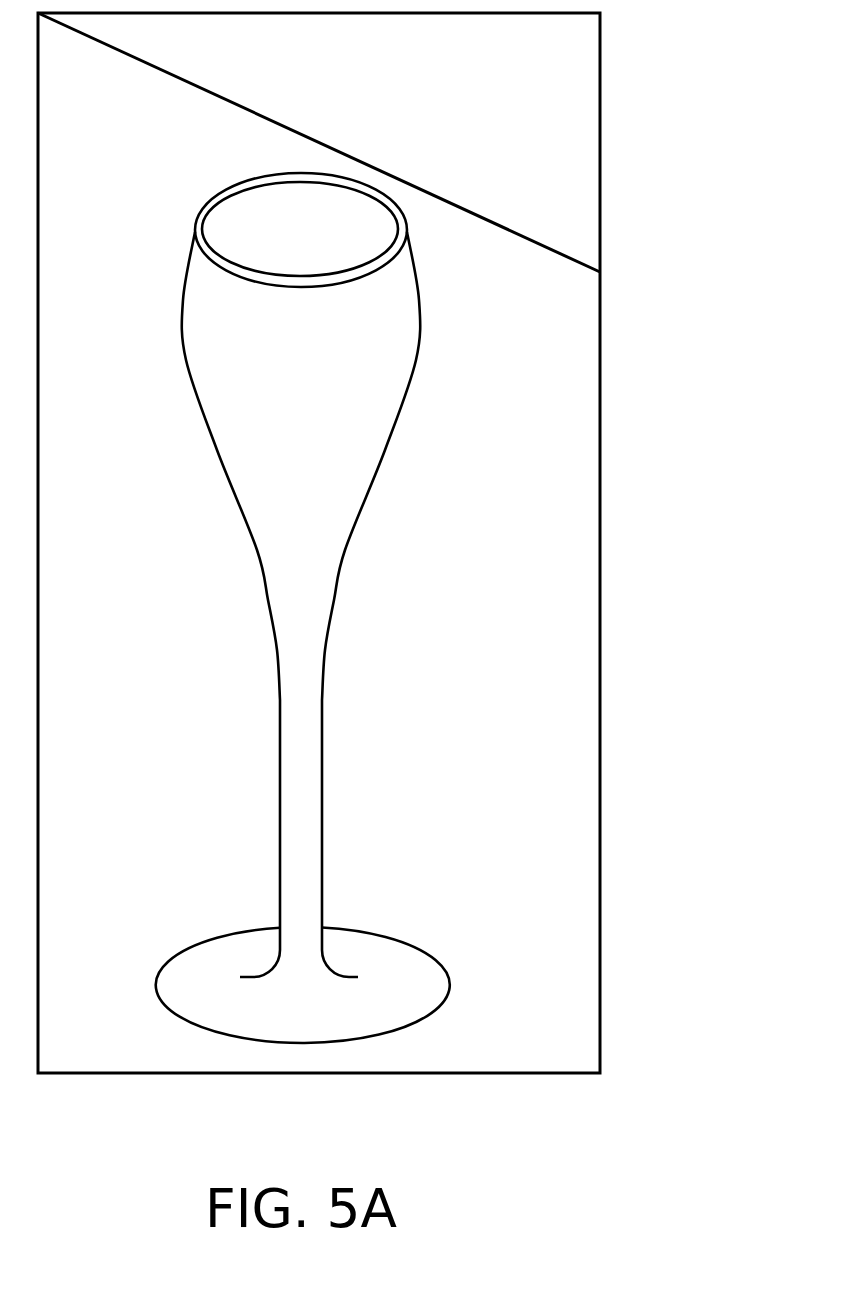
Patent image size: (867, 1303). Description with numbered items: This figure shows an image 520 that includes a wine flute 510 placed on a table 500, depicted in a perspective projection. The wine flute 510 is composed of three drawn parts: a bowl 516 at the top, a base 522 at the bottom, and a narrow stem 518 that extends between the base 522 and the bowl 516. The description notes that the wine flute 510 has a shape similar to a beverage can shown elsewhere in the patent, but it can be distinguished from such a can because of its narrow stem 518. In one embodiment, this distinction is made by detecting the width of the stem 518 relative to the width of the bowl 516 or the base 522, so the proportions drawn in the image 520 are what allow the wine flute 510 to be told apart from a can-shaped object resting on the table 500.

The table 500 is at (138, 132).
The wine flute 510 is at (396, 137).
The bowl 516 is at (411, 383).
The stem 518 is at (322, 776).
The image 520 is at (600, 373).
The base 522 is at (423, 943).